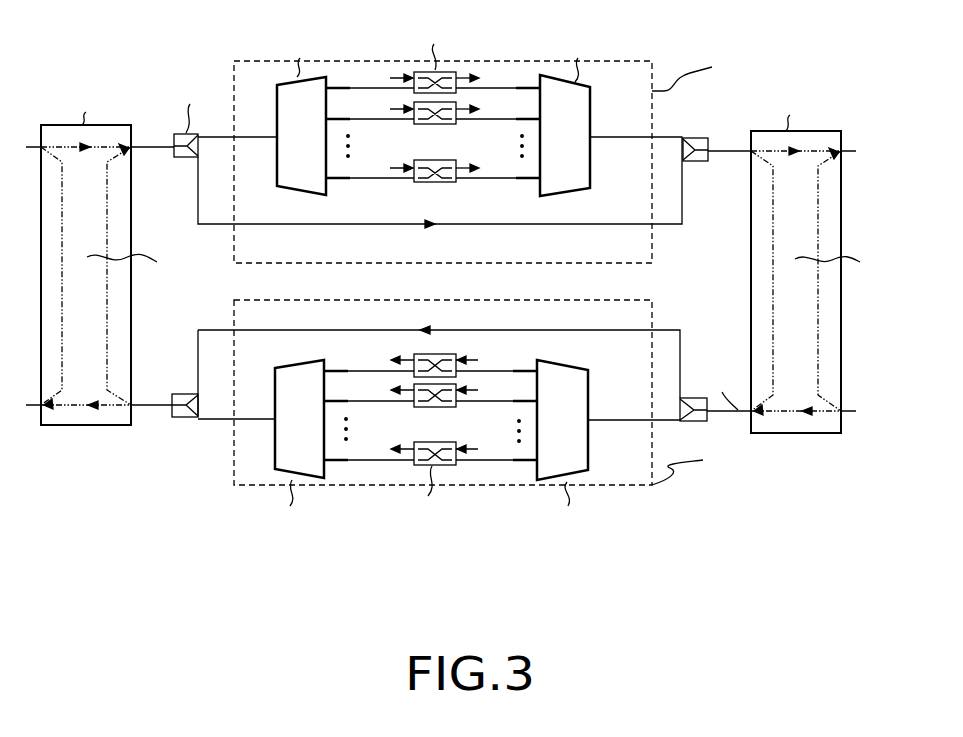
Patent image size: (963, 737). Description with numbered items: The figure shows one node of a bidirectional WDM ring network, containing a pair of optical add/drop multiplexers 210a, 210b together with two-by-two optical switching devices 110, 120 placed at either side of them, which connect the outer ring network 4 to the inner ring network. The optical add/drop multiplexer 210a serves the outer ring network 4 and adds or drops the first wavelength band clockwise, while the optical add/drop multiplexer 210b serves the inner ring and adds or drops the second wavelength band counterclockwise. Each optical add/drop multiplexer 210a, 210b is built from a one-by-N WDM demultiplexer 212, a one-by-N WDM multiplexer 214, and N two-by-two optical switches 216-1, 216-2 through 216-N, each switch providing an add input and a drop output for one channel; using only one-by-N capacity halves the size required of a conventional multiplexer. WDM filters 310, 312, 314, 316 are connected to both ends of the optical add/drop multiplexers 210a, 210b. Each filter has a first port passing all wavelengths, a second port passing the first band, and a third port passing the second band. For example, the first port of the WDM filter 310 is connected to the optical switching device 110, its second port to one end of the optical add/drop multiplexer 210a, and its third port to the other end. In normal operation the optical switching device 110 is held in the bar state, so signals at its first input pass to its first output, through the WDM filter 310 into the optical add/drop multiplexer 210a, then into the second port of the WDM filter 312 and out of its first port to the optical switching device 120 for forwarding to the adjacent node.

The 2×2 optical switching device 110 is at (68, 426).
The 2×2 optical switching device 120 is at (790, 434).
The optical add/drop multiplexer 210a is at (652, 235).
The optical add/drop multiplexer 210b is at (652, 318).
The 1×N WDM demultiplexer 212 is at (297, 188).
The 1×N WDM multiplexer 214 is at (560, 195).
The 2×2 optical switch 216-1 is at (456, 70).
The 2×2 optical switch 216-2 is at (456, 124).
The 2×2 optical switch 216-N is at (456, 182).
The WDM filter 310 is at (183, 158).
The WDM filter 312 is at (692, 162).
The WDM filter 314 is at (180, 418).
The WDM filter 316 is at (695, 396).
The outer ring network 4 is at (716, 154).